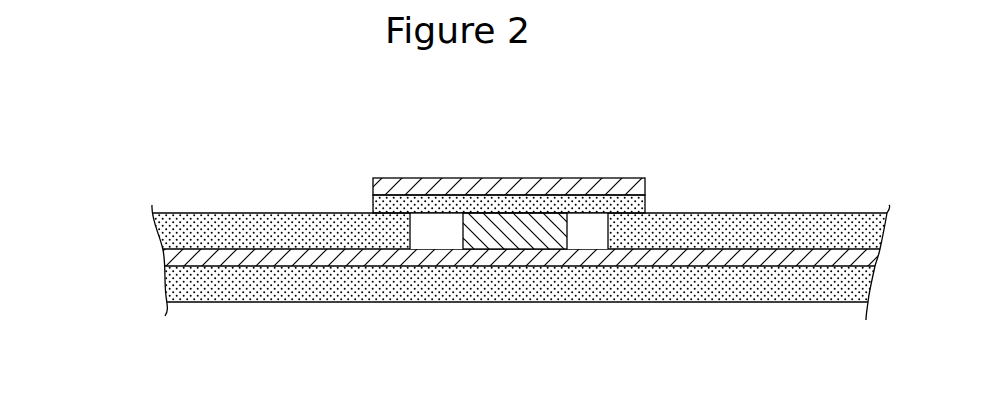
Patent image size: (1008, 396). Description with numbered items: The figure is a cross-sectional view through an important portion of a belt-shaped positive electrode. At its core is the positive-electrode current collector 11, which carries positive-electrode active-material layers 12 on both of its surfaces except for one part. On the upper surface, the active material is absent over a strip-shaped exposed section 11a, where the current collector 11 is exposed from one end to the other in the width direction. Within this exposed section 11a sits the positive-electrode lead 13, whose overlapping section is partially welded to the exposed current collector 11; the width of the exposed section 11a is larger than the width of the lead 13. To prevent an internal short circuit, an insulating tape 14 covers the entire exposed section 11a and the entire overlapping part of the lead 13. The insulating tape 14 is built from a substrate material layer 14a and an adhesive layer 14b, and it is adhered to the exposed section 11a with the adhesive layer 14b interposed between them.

The positive-electrode current collector 11 is at (162, 261).
The exposed section 11a is at (445, 247).
The positive-electrode active-material layer 12 is at (165, 232).
The positive-electrode lead 13 is at (525, 232).
The insulating tape 14 is at (570, 156).
The substrate material layer 14a is at (645, 185).
The adhesive layer 14b is at (549, 188).